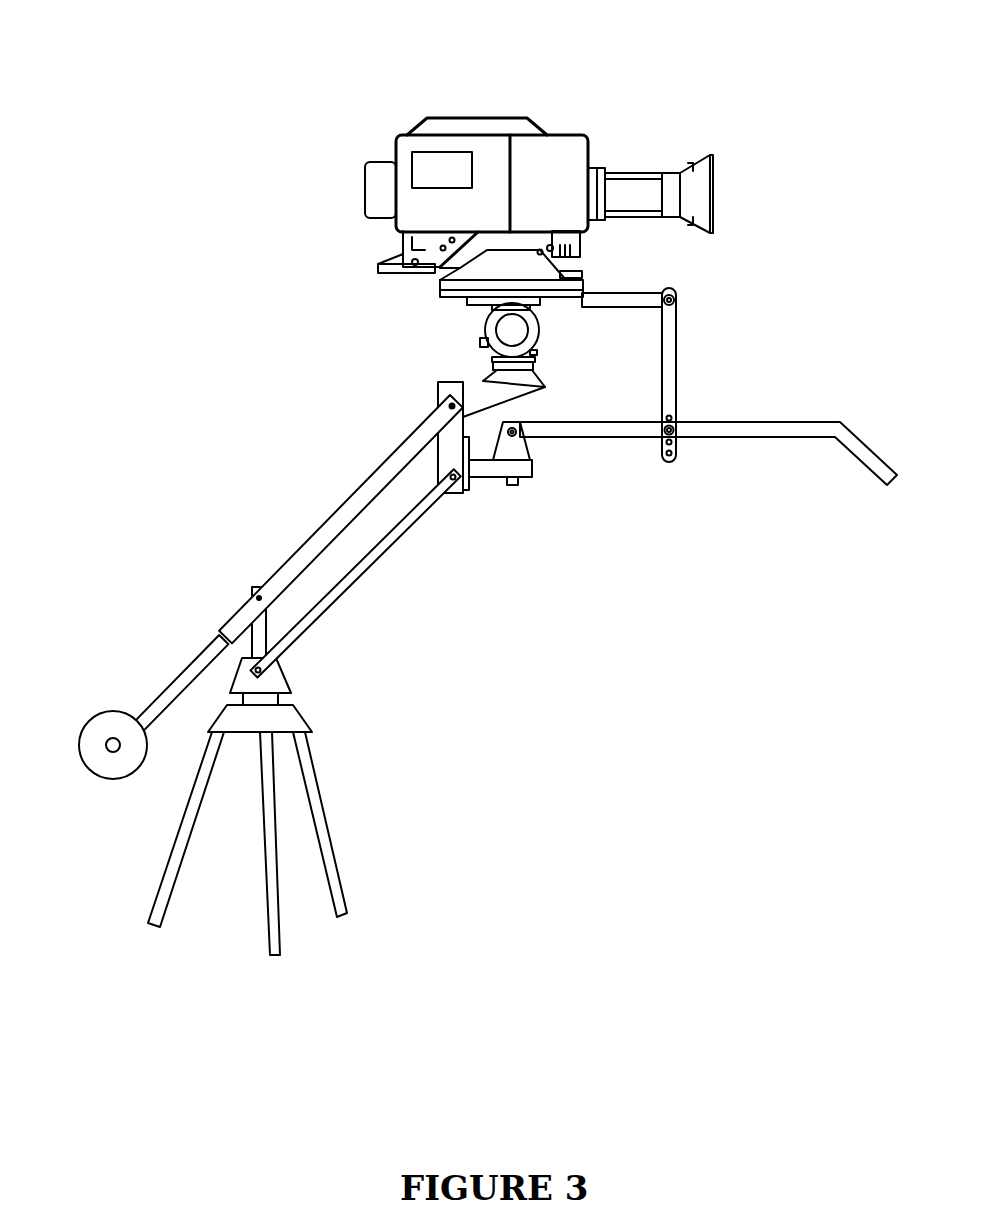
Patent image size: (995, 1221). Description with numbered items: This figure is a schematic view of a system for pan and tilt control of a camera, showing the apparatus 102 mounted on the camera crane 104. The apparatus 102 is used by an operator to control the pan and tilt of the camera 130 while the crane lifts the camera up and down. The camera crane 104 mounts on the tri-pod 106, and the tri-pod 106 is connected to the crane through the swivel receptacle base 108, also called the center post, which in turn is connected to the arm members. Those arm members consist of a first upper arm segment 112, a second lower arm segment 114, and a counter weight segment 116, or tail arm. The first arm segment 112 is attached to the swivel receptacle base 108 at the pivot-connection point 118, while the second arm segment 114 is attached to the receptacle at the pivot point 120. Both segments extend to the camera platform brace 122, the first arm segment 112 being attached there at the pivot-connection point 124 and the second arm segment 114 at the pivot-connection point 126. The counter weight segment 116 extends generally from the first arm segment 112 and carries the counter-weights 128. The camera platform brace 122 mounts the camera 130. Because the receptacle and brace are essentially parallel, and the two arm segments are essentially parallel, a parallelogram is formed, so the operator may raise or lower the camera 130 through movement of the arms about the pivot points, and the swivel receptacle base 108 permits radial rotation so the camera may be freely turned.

The apparatus 102 is at (750, 306).
The camera crane 104 is at (285, 440).
The tri-pod 106 is at (366, 830).
The swivel receptacle base 108 is at (287, 682).
The first upper arm segment 112 is at (335, 525).
The second lower arm segment 114 is at (363, 567).
The counter weight segment 116 is at (197, 657).
The pivot-connection point 118 is at (266, 670).
The pivot point 120 is at (258, 598).
The camera platform brace 122 is at (446, 382).
The pivot-connection point 124 is at (449, 404).
The pivot-connection point 126 is at (454, 486).
The counter-weights 128 is at (105, 718).
The camera 130 is at (488, 112).